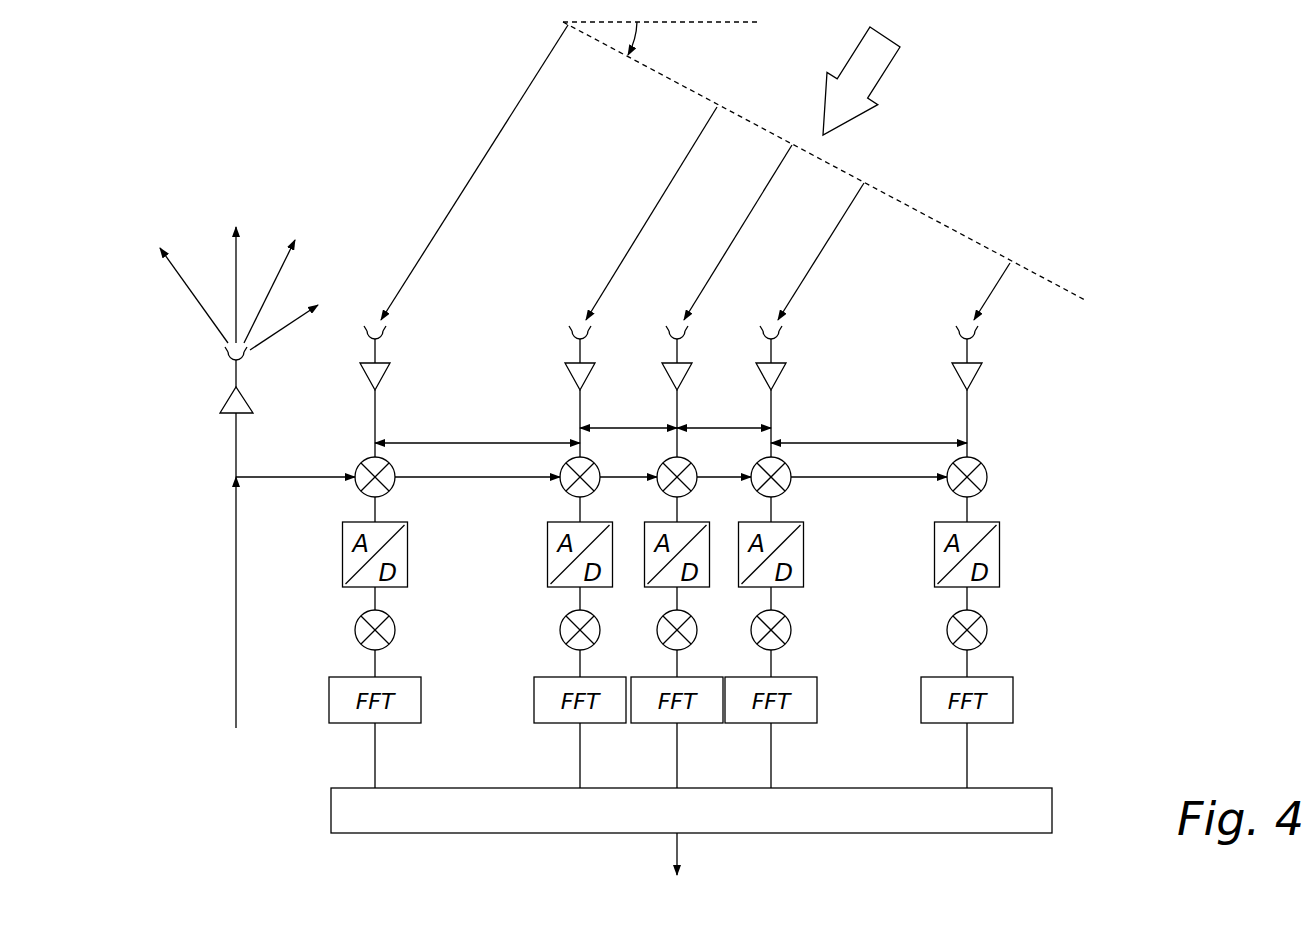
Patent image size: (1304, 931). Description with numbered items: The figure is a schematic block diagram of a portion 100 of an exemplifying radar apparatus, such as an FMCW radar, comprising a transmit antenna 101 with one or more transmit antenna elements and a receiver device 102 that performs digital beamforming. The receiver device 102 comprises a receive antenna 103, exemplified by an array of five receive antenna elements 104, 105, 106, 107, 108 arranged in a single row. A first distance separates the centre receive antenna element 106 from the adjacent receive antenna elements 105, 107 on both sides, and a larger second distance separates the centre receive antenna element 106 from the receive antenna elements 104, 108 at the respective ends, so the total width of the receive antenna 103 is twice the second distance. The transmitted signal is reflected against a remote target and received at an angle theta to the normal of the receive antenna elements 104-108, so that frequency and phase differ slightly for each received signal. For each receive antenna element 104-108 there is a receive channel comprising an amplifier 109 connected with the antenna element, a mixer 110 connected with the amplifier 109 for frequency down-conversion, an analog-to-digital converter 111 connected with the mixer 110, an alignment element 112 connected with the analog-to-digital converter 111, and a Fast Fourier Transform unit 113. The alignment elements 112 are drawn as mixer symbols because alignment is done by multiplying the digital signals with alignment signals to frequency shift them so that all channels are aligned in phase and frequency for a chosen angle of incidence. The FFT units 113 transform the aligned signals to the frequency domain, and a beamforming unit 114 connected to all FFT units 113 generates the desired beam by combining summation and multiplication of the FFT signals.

The portion of radar apparatus 100 is at (388, 110).
The transmit antenna 101 is at (207, 352).
The receiver device 102 is at (403, 252).
The receive antenna 103 is at (363, 318).
The receive antenna element 104 is at (383, 333).
The receive antenna element 105 is at (588, 333).
The centre receive antenna element 106 is at (685, 334).
The receive antenna element 107 is at (779, 333).
The receive antenna element 108 is at (975, 333).
The amplifier 109 is at (388, 378).
The mixer 110 is at (392, 488).
The analog-to-digital converter 111 is at (342, 545).
The alignment element 112 is at (395, 628).
The Fast Fourier Transform unit 113 is at (340, 677).
The beamforming unit 114 is at (1052, 810).